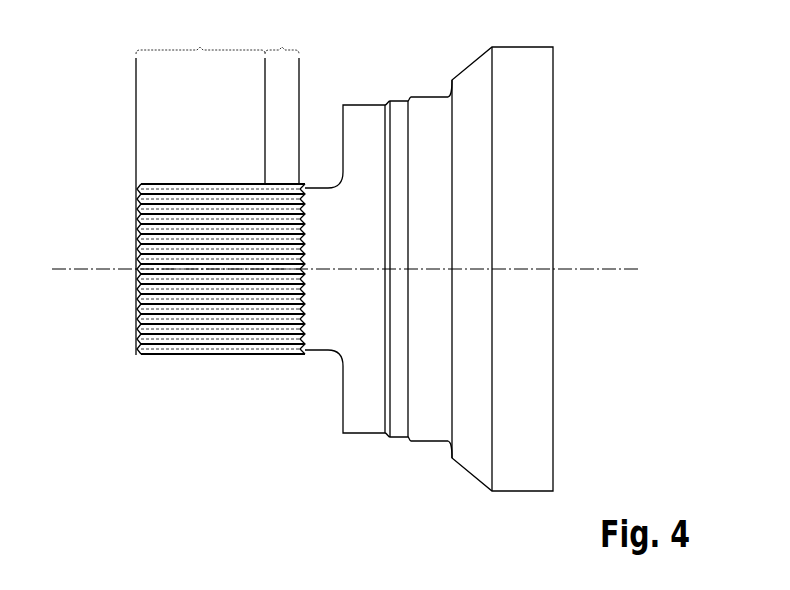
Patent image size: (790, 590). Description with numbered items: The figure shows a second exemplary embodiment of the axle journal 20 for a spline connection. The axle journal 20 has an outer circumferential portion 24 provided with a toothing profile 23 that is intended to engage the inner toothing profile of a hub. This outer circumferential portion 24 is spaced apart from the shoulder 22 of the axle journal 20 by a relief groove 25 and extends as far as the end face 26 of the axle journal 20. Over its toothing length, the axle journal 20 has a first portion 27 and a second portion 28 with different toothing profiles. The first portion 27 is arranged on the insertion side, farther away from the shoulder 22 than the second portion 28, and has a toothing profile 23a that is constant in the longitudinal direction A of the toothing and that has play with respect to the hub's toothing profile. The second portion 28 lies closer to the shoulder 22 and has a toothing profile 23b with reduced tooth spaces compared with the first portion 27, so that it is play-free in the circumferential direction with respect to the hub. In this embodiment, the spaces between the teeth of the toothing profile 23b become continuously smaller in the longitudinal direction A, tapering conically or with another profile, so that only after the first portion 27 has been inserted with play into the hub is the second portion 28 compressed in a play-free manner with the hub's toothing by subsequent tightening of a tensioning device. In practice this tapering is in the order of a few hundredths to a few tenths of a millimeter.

The longitudinal direction A is at (90, 268).
The axle journal 20 is at (182, 260).
The shoulder 22 is at (343, 123).
The toothing profile 23 is at (228, 304).
The toothing profile of the first portion 23a is at (172, 340).
The toothing profile of the second portion 23b is at (277, 340).
The outer circumferential portion 24 is at (227, 213).
The relief groove 25 is at (328, 351).
The end face 26 is at (136, 312).
The first portion 27 is at (200, 97).
The second portion 28 is at (282, 97).